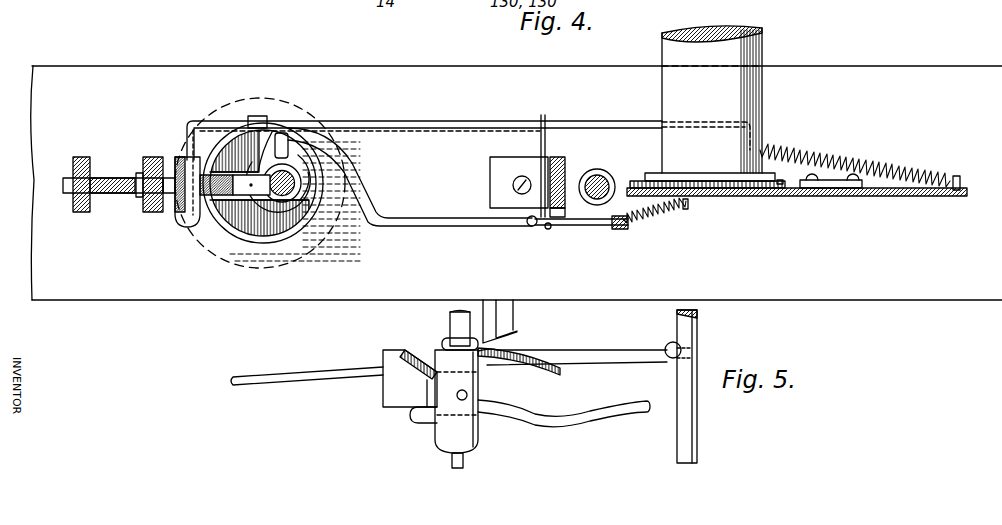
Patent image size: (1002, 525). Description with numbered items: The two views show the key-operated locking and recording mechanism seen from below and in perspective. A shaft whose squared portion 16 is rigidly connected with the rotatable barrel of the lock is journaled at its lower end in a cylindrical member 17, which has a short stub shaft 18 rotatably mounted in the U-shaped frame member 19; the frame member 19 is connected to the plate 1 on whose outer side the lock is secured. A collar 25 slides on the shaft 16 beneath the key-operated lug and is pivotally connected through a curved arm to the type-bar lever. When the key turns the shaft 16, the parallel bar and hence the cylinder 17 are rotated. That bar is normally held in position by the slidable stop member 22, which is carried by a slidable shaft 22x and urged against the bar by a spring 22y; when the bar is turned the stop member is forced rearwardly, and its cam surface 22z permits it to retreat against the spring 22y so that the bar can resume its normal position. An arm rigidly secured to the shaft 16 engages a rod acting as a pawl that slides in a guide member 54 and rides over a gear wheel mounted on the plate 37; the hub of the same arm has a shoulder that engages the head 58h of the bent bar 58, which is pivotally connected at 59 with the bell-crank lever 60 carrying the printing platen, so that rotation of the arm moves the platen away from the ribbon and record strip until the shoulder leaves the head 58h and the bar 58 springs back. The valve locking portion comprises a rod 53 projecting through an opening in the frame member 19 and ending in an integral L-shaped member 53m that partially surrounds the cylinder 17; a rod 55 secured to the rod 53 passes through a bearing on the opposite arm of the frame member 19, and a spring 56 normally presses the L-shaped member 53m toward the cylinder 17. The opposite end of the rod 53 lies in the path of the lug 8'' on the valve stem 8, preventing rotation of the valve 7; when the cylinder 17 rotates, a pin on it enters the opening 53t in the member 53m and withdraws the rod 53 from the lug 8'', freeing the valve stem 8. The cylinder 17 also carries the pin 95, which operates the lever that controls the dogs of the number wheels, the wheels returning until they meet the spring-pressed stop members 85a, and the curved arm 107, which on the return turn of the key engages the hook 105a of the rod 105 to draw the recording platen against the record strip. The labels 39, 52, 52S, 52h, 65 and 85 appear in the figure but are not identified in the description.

In FIG. 4, the plate 1 is at (937, 78).
In FIG. 5, the valve 7 is at (667, 418).
In FIG. 4, the valve stem 8 is at (605, 180).
In FIG. 5, the valve stem 8 is at (673, 386).
In FIG. 5, the lug 8'' is at (655, 341).
In FIG. 4, the squared portion of shaft 16 is at (305, 176).
In FIG. 5, the squared portion of shaft 16 is at (457, 328).
In FIG. 5, the cylindrical member 17 is at (473, 437).
In FIG. 5, the stub shaft 18 is at (465, 462).
In FIG. 4, the frame member 19 is at (73, 168).
In FIG. 4, the stop member 22 is at (178, 208).
In FIG. 4, the slidable shaft 22x is at (138, 172).
In FIG. 4, the spring 22y is at (117, 173).
In FIG. 4, the cam surface 22z is at (203, 222).
In FIG. 5, the collar 25 is at (514, 327).
In FIG. 4, the plate 37 is at (943, 200).
In FIG. 4, the cylinder 39 is at (727, 28).
In FIG. 4, the cam body 52 is at (262, 242).
In FIG. 4, the cam arm upper edge 52S is at (315, 128).
In FIG. 4, the cam arm lower edge 52h is at (316, 148).
In FIG. 4, the rod 53 is at (466, 122).
In FIG. 5, the rod 53 is at (563, 360).
In FIG. 5, the L-shaped member 53m is at (420, 376).
In FIG. 5, the opening 53t is at (470, 397).
In FIG. 4, the guide member 54 is at (258, 116).
In FIG. 4, the rod 55 is at (187, 129).
In FIG. 5, the rod 55 is at (293, 366).
In FIG. 4, the spring 56 is at (897, 160).
In FIG. 4, the bar 58 is at (470, 222).
In FIG. 4, the head 58h is at (282, 132).
In FIG. 4, the pivotal connection 59 is at (534, 227).
In FIG. 4, the bell-crank lever 60 is at (603, 228).
In FIG. 4, the small spring 65 is at (655, 212).
In FIG. 4, the shaded housing 85 is at (222, 222).
In FIG. 4, the spring-pressed stop members 85a is at (312, 218).
In FIG. 5, the pin 95 is at (417, 352).
In FIG. 5, the rod 105 is at (627, 413).
In FIG. 5, the hook 105a is at (417, 414).
In FIG. 5, the arm 107 is at (432, 433).